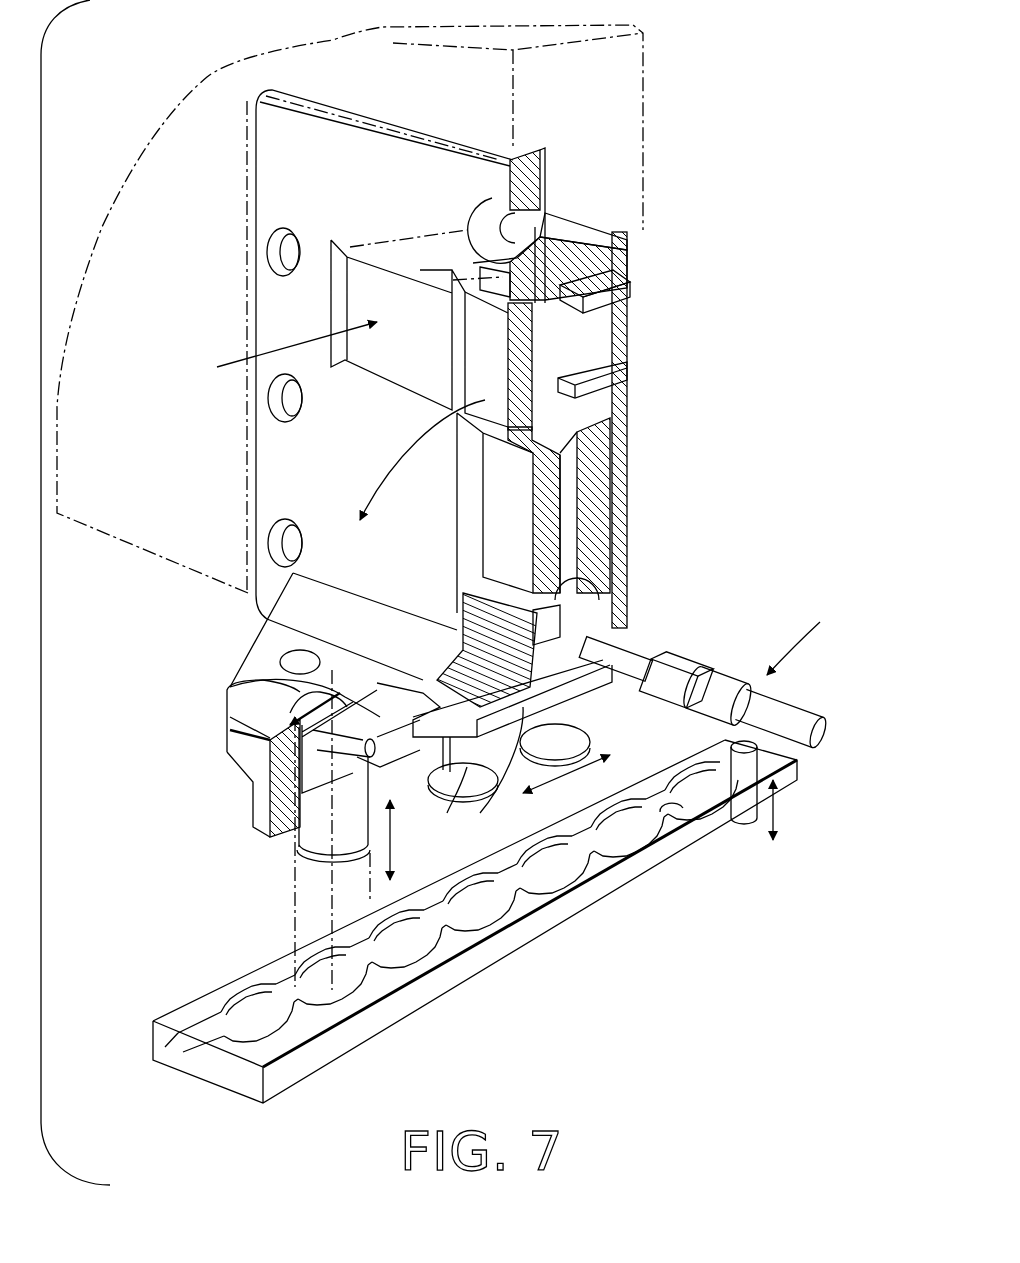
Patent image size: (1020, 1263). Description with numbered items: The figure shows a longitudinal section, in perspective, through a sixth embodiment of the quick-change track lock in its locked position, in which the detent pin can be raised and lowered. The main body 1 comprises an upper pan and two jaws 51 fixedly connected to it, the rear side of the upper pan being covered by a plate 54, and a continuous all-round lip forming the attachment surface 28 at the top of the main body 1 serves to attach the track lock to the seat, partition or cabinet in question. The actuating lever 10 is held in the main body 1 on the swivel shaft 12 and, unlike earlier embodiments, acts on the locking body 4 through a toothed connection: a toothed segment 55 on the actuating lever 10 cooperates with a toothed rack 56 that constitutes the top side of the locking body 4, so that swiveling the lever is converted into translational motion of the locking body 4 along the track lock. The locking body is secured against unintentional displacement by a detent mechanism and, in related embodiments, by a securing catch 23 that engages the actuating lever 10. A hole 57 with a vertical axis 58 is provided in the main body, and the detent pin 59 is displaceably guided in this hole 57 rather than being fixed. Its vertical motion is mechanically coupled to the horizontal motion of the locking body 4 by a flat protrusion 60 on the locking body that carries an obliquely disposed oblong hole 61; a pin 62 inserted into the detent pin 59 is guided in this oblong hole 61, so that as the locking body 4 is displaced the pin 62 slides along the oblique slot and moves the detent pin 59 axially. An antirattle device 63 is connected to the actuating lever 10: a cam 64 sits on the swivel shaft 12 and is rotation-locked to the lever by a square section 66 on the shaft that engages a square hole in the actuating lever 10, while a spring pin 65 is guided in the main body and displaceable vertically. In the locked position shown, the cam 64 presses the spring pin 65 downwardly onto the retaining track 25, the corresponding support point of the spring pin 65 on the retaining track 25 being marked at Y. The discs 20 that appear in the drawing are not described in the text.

The attachment surface 28 is at (267, 160).
The securing catch 23 is at (362, 287).
The actuating lever 10 is at (503, 493).
The plate 54 is at (623, 333).
The main body 1 is at (600, 262).
The swivel shaft 12 is at (620, 647).
The square section 66 is at (677, 670).
The cam 64 is at (723, 690).
The antirattle device 63 is at (797, 670).
The toothed segment 55 is at (490, 615).
The toothed rack 56 is at (463, 677).
The flat protrusion 60 is at (268, 632).
The hole 57 is at (313, 707).
The jaws 51 is at (240, 763).
The oblong hole 61 is at (273, 793).
The detent pin 59 is at (317, 845).
The pin 62 is at (293, 828).
The vertical axis 58 is at (333, 907).
The disc 20 is at (573, 735).
The locking body 4 is at (520, 760).
The spring pin 65 is at (747, 800).
The retaining track 25 is at (160, 1050).
The support point Y is at (668, 827).